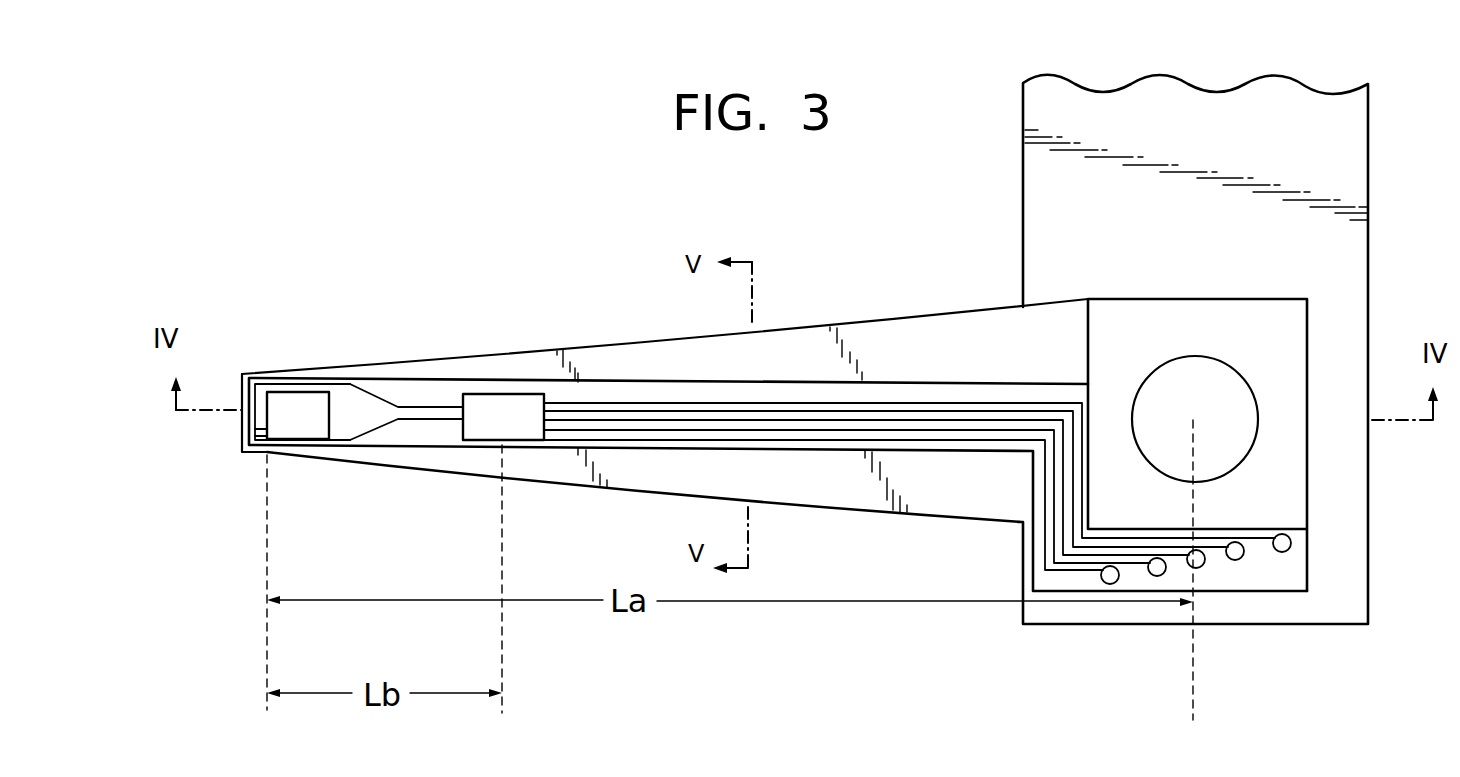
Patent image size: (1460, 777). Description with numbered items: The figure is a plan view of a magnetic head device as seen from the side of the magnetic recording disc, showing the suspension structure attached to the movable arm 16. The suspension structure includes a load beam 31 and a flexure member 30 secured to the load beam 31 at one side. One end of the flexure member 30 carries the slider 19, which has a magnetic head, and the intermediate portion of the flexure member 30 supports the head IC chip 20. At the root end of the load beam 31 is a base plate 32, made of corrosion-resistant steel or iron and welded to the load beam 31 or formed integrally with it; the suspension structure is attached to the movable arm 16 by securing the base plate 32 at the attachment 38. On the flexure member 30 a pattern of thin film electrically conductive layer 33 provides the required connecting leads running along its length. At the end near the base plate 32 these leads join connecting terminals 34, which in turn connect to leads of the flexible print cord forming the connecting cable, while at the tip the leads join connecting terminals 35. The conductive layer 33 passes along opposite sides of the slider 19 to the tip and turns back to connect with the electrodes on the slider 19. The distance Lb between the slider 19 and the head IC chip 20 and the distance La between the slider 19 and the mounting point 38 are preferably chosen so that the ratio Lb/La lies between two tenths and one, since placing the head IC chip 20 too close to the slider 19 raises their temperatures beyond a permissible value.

The movable arm 16 is at (1057, 165).
The slider 19 is at (303, 405).
The head IC chip 20 is at (503, 407).
The flexure member 30 is at (805, 393).
The load beam 31 is at (868, 345).
The base plate 32 is at (1277, 298).
The thin film electrically conductive layer 33 is at (625, 403).
The connecting terminals 34 is at (1110, 575).
The connecting terminals 35 is at (258, 418).
The attachment 38 is at (1227, 432).